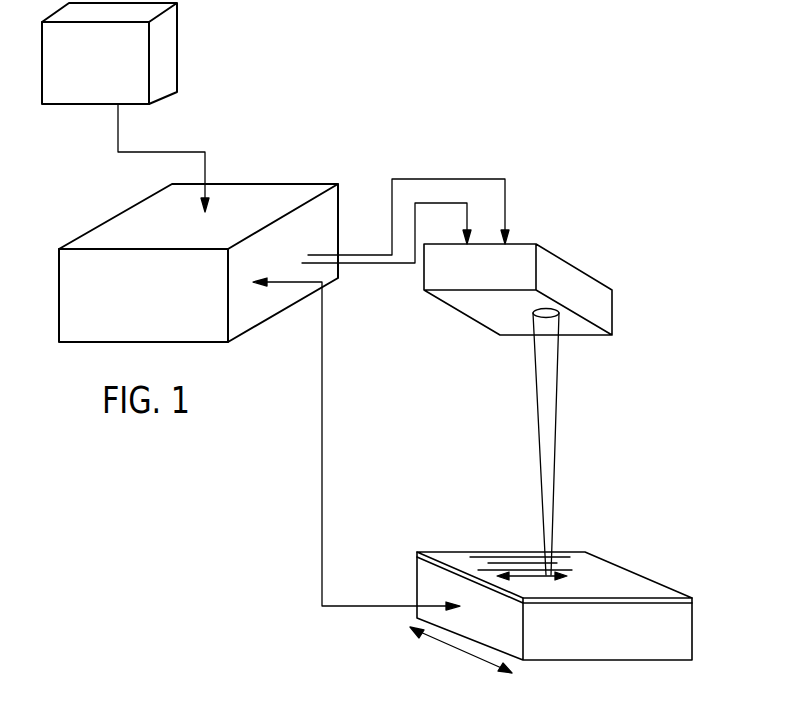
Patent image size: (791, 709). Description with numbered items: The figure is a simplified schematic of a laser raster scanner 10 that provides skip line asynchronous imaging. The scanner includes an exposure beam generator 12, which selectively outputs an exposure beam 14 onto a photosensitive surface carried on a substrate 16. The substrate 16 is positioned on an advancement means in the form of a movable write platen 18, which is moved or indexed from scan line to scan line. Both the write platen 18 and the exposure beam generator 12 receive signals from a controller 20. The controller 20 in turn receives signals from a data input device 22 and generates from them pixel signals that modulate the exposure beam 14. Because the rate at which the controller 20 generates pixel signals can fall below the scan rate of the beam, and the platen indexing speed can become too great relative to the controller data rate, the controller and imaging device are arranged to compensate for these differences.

The laser raster scanner 10 is at (408, 158).
The exposure beam generator 12 is at (440, 273).
The exposure beam 14 is at (548, 388).
The substrate 16 is at (605, 568).
The movable write platen 18 is at (561, 648).
The controller 20 is at (243, 312).
The data input device 22 is at (173, 48).